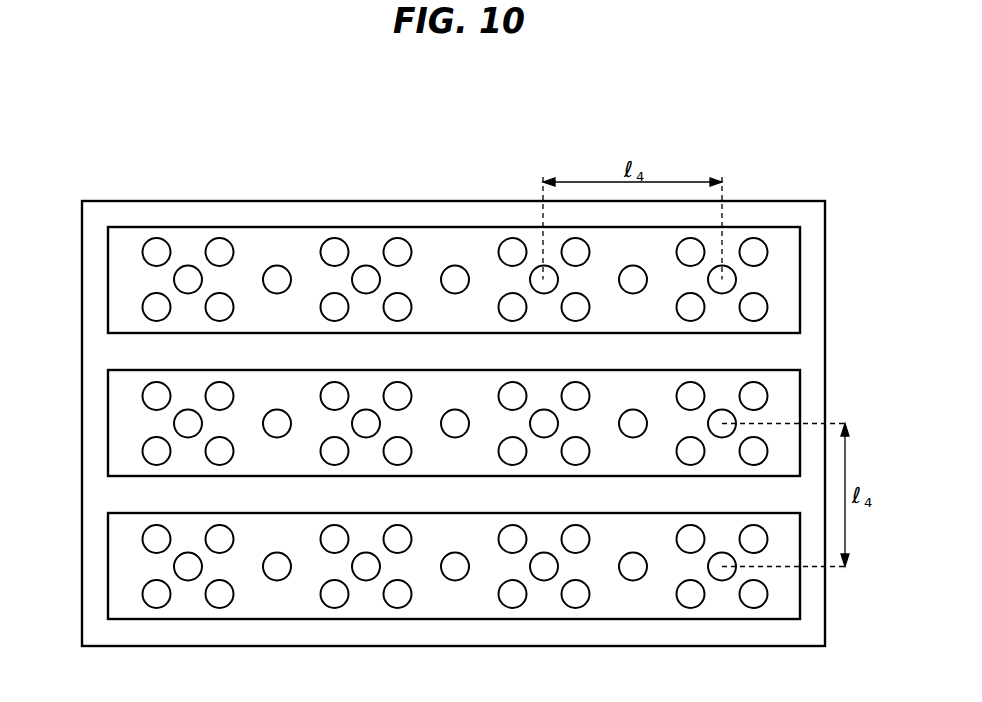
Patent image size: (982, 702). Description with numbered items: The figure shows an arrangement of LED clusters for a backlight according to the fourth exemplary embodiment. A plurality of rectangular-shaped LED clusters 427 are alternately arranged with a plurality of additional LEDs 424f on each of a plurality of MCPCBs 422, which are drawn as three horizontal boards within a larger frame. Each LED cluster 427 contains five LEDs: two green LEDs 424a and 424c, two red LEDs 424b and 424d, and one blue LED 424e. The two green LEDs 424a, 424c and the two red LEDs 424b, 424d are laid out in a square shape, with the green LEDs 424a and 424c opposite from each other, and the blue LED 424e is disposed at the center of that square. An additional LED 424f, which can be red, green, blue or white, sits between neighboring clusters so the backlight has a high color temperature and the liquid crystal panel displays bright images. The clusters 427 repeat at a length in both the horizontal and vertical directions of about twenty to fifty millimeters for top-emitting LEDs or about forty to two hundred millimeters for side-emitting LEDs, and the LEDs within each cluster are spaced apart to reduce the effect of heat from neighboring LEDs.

The MCPCB 422 is at (787, 272).
The rectangular-shaped LED cluster 427 is at (170, 195).
The green LED 424a is at (155, 240).
The red LED 424b is at (215, 240).
The green LED 424c is at (227, 292).
The red LED 424d is at (153, 297).
The blue LED 424e is at (187, 268).
The additional LED 424f is at (280, 272).